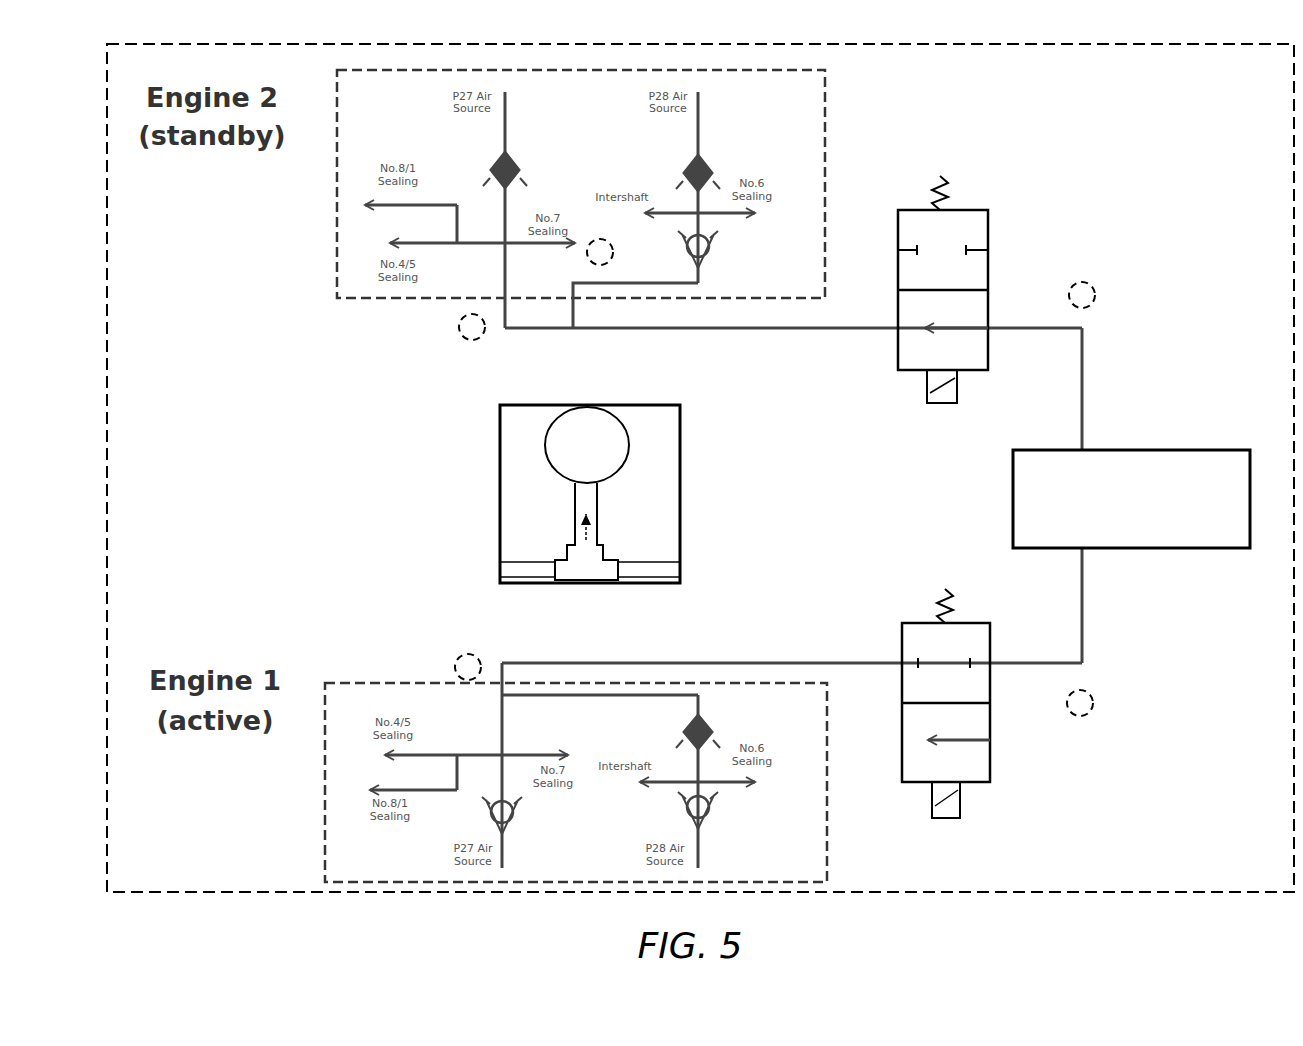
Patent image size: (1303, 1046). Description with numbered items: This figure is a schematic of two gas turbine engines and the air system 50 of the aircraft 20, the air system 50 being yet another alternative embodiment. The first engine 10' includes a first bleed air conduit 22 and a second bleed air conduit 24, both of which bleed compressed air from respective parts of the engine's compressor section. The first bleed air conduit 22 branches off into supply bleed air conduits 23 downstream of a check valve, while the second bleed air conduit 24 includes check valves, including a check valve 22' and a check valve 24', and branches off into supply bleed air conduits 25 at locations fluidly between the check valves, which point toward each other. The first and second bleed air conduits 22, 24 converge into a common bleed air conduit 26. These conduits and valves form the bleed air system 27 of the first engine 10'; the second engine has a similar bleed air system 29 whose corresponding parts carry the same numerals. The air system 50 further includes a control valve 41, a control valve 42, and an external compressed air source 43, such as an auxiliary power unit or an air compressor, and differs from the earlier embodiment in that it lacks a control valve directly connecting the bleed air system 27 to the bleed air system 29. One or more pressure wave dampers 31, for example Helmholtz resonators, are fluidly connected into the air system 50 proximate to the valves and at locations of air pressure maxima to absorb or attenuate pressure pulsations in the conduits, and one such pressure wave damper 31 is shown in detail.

The aircraft 20 is at (1248, 75).
The air system 50 is at (235, 240).
The first engine 10' is at (576, 782).
The first bleed air conduit 22 is at (539, 480).
The check valve 22' is at (535, 492).
The supply bleed air conduits 23 is at (505, 243).
The second bleed air conduit 24 is at (638, 480).
The check valve 24' is at (727, 489).
The supply bleed air conduits 25 is at (698, 213).
The common bleed air conduit 26 is at (770, 328).
The bleed air system 27 is at (390, 560).
The bleed air system 29 is at (395, 428).
The pressure wave damper 31 is at (472, 341).
The control valve 41 is at (990, 640).
The control valve 42 is at (988, 232).
The external compressed air source 43 is at (1125, 450).